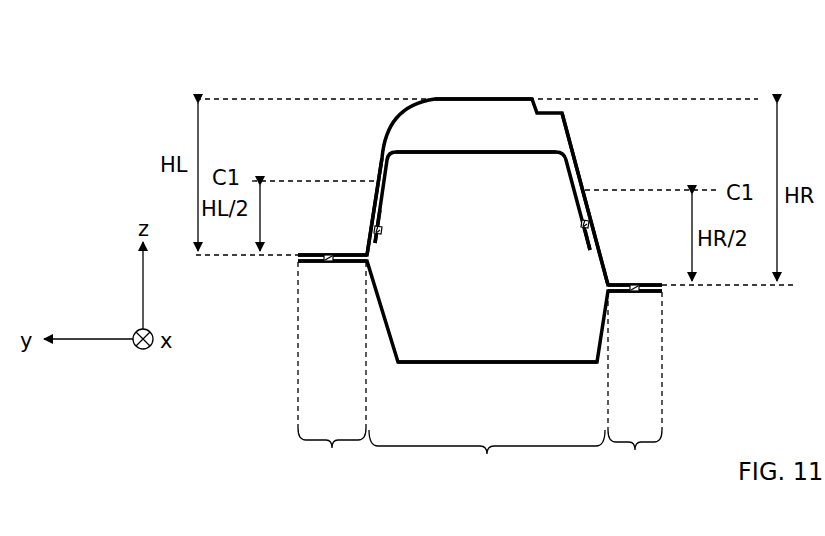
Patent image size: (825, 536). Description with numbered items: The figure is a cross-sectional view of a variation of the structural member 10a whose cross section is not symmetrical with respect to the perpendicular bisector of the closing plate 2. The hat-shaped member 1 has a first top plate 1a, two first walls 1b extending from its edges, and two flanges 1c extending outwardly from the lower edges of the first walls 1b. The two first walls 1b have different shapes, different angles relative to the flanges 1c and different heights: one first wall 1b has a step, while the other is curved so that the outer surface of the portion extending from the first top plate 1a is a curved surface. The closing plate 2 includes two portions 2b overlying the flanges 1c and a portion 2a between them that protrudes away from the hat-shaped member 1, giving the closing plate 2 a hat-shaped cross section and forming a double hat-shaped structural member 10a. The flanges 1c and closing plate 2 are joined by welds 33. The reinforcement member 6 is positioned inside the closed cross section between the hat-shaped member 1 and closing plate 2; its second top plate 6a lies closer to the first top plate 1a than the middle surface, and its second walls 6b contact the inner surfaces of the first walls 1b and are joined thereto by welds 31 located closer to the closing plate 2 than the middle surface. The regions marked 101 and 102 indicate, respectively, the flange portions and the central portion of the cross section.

The hat-shaped member 1 is at (513, 94).
The first top plate 1a is at (480, 97).
The first walls 1b is at (379, 155).
The flanges 1c is at (345, 253).
The closing plate 2 is at (469, 365).
The portion of the closing plate 2a is at (560, 366).
The portions of the closing plate overlying the flanges 2b is at (345, 263).
The reinforcement member 6 is at (530, 145).
The second top plate 6a is at (505, 149).
The second walls 6b is at (377, 243).
The structural member 10a is at (338, 65).
The welds 31 is at (380, 229).
The welds 33 is at (324, 253).
The flange region 101 is at (480, 382).
The closed cross-section region 102 is at (492, 491).